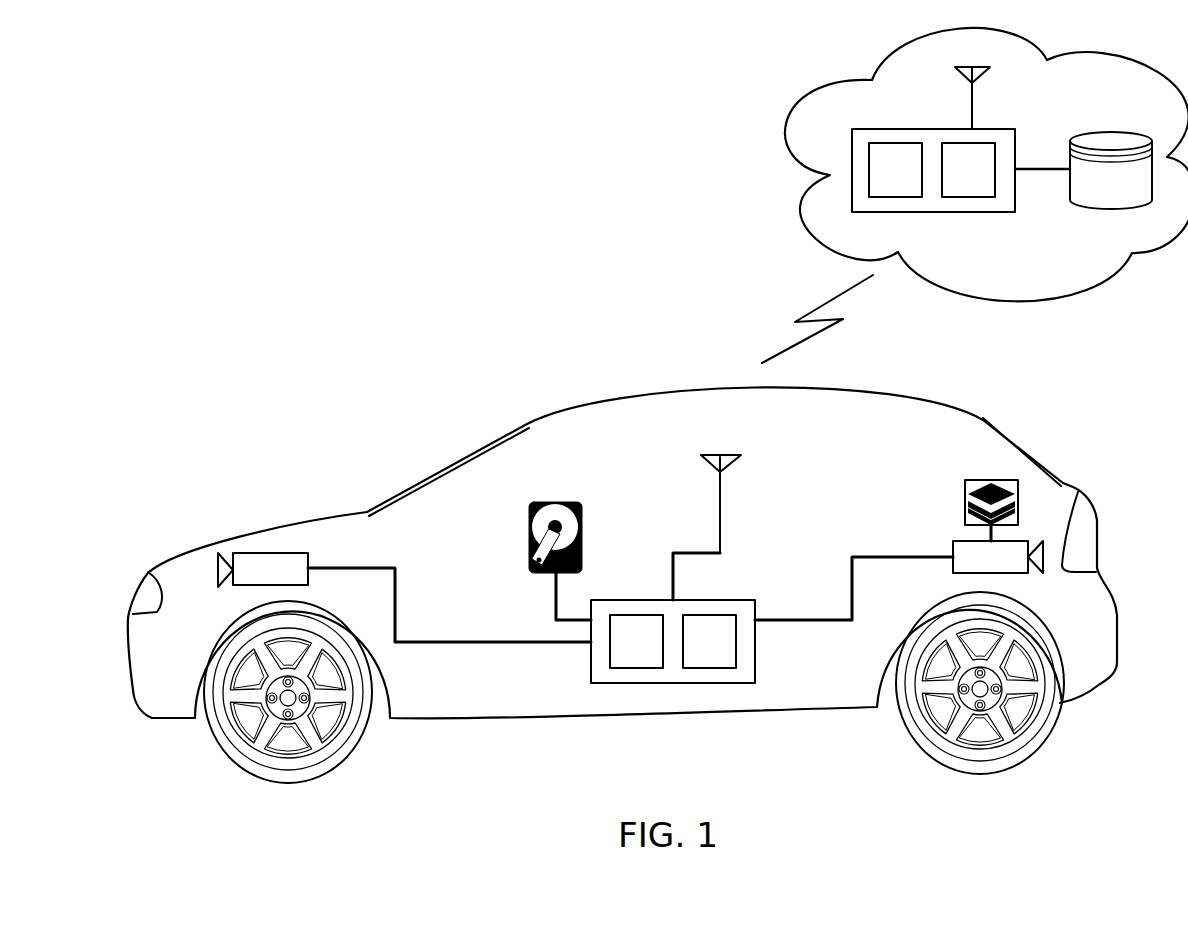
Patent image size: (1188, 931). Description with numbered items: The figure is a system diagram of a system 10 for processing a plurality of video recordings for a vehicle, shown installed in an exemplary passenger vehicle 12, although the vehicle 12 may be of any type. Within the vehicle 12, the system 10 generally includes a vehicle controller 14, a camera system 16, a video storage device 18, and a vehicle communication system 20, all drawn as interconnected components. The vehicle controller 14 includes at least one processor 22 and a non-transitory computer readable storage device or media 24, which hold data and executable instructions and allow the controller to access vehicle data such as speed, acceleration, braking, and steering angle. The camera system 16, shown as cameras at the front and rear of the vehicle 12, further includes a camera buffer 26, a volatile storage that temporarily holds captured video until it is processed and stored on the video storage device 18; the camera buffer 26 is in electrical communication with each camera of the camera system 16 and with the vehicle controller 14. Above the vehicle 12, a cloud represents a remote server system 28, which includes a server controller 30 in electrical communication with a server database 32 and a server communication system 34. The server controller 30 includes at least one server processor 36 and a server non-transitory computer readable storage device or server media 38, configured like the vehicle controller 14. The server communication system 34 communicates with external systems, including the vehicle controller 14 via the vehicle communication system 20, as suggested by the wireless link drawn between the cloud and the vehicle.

The system for processing a plurality of video recordings for a vehicle 10 is at (868, 437).
The vehicle 12 is at (256, 528).
The vehicle controller 14 is at (755, 683).
The camera system 16 is at (257, 581).
The video storage device 18 is at (530, 566).
The vehicle communication system 20 is at (714, 467).
The processor 22 is at (623, 654).
The non-transitory computer readable storage device or media 24 is at (696, 654).
The camera buffer 26 is at (965, 497).
The remote server system 28 is at (802, 90).
The server controller 30 is at (932, 212).
The server database 32 is at (1097, 196).
The server communication system 34 is at (966, 78).
The server processor 36 is at (882, 182).
The server non-transitory computer readable storage device or server media 38 is at (955, 182).